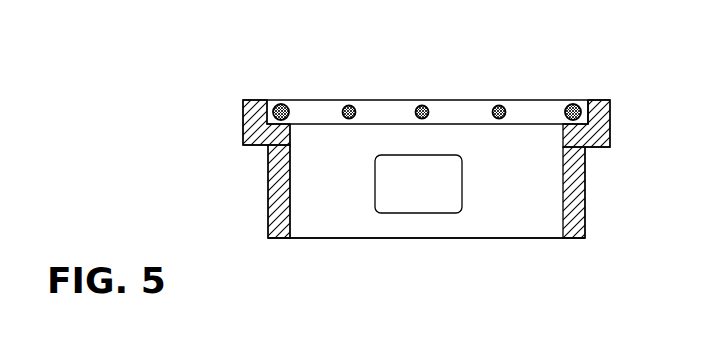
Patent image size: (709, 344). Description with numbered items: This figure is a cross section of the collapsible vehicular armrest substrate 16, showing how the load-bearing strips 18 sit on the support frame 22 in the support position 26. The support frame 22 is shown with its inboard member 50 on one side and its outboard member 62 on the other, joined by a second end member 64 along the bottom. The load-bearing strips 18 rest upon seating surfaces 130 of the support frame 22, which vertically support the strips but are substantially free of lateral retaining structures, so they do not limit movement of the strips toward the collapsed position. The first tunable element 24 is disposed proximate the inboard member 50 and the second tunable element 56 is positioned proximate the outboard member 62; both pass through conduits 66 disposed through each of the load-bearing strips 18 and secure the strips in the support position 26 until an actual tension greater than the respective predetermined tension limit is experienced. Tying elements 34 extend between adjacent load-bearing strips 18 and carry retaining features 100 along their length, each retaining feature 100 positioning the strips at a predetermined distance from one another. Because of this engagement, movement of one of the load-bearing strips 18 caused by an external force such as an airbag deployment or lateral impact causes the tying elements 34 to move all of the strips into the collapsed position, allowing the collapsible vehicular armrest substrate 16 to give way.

The collapsible vehicular armrest substrate 16 is at (222, 82).
The load-bearing strips 18 is at (471, 112).
The support frame 22 is at (597, 208).
The first tunable element 24 is at (573, 104).
The support position 26 is at (242, 173).
The tying elements 34 is at (423, 105).
The inboard member 50 is at (612, 140).
The second tunable element 56 is at (247, 119).
The outboard member 62 is at (278, 198).
The second end member 64 is at (525, 225).
The conduits 66 is at (285, 105).
The retaining features 100 is at (350, 105).
The seating surfaces 130 is at (590, 108).